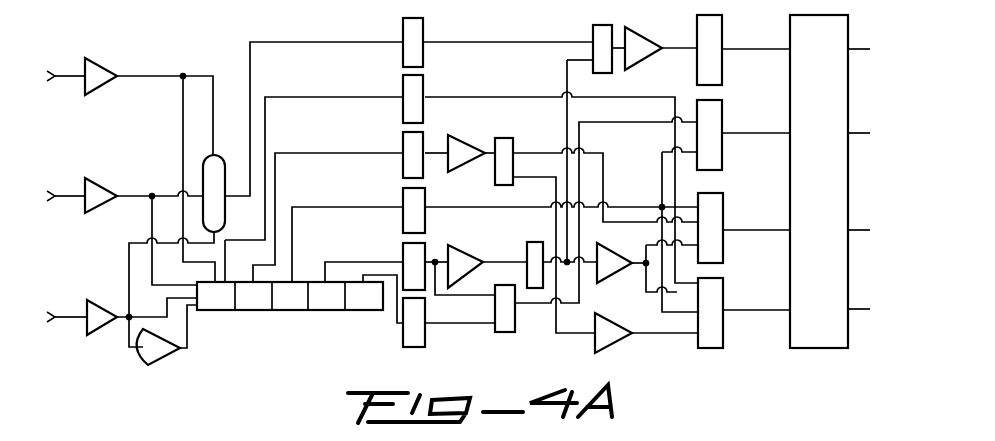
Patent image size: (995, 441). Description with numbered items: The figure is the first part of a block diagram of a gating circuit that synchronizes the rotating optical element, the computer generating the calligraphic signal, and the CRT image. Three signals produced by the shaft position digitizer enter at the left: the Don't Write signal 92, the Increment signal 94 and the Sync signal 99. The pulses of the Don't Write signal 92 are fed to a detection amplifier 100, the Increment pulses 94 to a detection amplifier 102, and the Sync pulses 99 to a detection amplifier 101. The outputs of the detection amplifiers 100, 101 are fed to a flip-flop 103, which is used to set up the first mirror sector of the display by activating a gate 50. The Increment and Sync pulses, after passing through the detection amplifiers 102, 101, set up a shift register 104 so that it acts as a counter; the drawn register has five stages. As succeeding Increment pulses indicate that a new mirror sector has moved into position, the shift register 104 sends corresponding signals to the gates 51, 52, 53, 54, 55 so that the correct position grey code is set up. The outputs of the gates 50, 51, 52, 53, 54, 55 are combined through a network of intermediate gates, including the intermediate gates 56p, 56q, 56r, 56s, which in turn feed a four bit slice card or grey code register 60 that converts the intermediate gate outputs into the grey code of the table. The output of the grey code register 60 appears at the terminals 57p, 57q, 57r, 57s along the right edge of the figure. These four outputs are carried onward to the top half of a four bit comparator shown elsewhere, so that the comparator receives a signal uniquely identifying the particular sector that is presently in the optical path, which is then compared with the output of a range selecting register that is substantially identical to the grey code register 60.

The Don't Write signal 92 is at (50, 78).
The Sync signal 99 is at (51, 198).
The Increment signal 94 is at (52, 319).
The detection amplifier 100 is at (98, 67).
The detection amplifier 101 is at (93, 187).
The detection amplifier 102 is at (97, 298).
The flip-flop 103 is at (213, 200).
The shift register 104 is at (276, 311).
The gate 50 is at (405, 51).
The gate 51 is at (405, 113).
The gate 52 is at (405, 168).
The gate 53 is at (405, 227).
The gate 54 is at (425, 247).
The gate 55 is at (405, 333).
The intermediate gate 56p is at (717, 33).
The intermediate gate 56q is at (718, 122).
The intermediate gate 56r is at (720, 217).
The intermediate gate 56s is at (718, 305).
The terminal 57p is at (858, 47).
The terminal 57q is at (856, 130).
The terminal 57r is at (858, 228).
The terminal 57s is at (866, 298).
The grey code register 60 is at (790, 331).